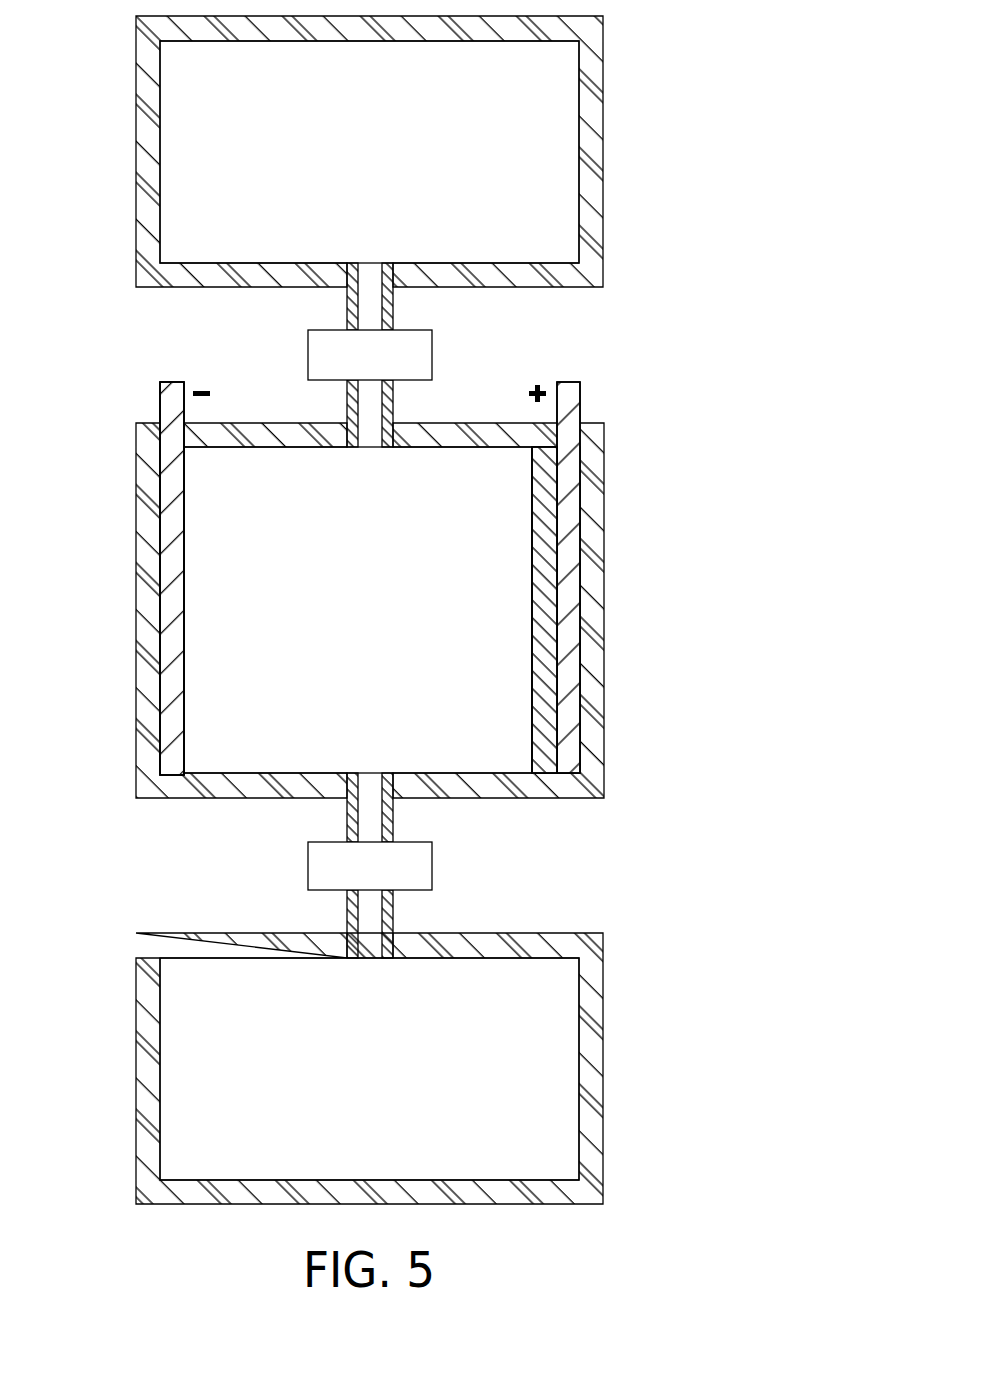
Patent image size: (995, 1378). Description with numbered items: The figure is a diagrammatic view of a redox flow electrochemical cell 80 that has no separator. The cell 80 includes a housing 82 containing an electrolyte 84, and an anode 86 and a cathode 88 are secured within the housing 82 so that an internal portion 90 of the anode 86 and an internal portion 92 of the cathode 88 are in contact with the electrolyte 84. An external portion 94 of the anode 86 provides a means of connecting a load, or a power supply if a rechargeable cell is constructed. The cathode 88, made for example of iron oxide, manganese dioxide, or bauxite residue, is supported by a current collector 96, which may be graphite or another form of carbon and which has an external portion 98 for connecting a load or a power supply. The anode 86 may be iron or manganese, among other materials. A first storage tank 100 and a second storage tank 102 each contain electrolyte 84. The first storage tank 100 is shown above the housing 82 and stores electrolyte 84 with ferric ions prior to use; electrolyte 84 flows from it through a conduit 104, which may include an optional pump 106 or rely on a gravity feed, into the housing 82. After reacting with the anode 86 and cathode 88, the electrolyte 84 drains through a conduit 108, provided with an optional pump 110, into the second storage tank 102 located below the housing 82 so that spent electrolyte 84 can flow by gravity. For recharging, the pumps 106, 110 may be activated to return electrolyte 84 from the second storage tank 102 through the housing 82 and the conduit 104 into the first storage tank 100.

The redox flow electrochemical cell 80 is at (735, 386).
The housing 82 is at (595, 510).
The electrolyte 84 is at (359, 160).
The anode 86 is at (177, 590).
The cathode 88 is at (543, 680).
The internal portion of the anode 90 is at (172, 670).
The internal portion of the cathode 92 is at (548, 603).
The external portion of the anode 94 is at (160, 405).
The current collector 96 is at (567, 720).
The external portion of the current collector 98 is at (583, 388).
The first storage tank 100 is at (593, 133).
The second storage tank 102 is at (600, 1032).
The conduit 104 is at (393, 305).
The pump 106 is at (308, 352).
The conduit 108 is at (393, 825).
The pump 110 is at (308, 875).